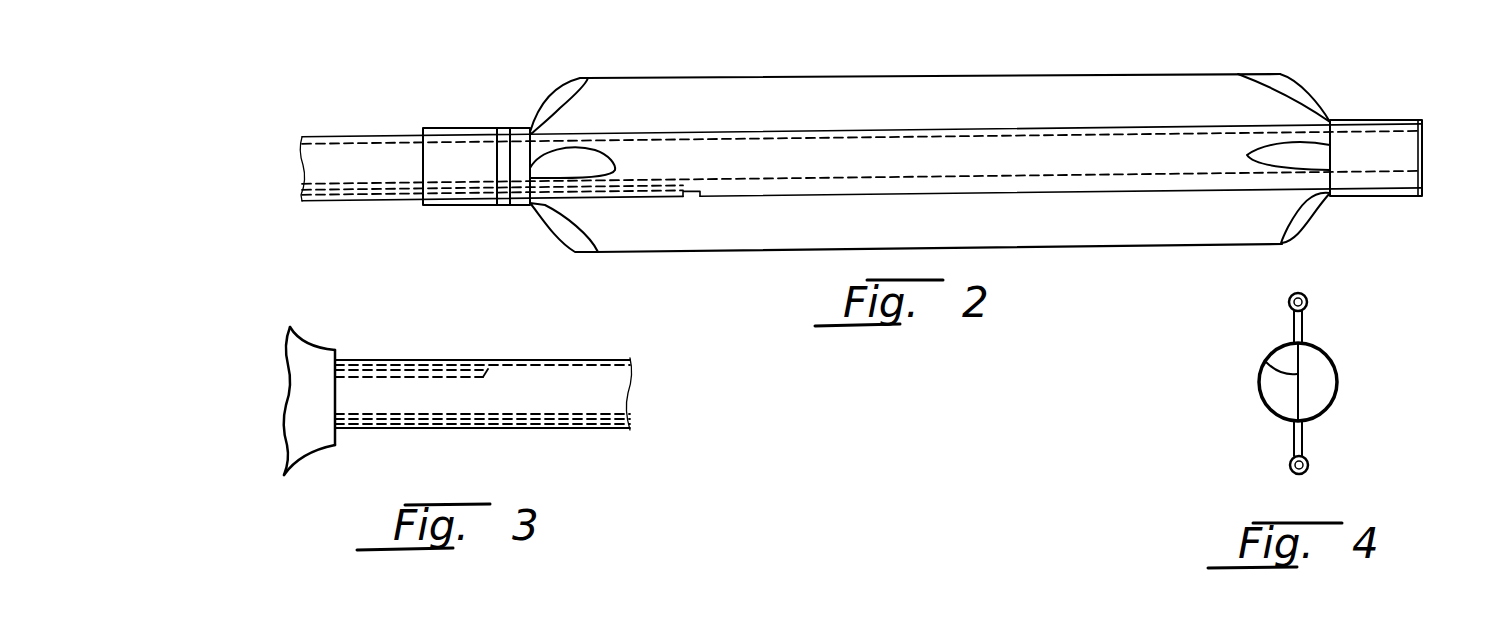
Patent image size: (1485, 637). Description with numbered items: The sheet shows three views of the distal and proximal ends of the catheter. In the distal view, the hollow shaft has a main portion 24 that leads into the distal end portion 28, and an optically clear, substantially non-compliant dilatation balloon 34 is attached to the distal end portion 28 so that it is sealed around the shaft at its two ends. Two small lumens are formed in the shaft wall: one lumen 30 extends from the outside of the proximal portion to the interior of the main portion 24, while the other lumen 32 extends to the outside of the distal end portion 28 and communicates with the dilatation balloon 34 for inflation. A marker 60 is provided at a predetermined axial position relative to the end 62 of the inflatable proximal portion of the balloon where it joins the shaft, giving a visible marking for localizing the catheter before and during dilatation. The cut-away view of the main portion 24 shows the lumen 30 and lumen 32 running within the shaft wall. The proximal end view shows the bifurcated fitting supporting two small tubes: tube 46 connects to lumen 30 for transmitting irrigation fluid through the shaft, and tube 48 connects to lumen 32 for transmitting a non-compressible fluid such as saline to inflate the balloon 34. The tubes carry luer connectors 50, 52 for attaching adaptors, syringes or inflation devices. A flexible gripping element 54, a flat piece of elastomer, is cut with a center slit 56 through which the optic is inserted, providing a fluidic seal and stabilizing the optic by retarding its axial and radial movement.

In FIG. 3, the main portion 24 is at (564, 360).
In FIG. 2, the distal end portion 28 is at (441, 106).
In FIG. 3, the lumen 30 is at (413, 372).
In FIG. 2, the lumen 32 is at (651, 195).
In FIG. 3, the lumen 32 is at (567, 422).
In FIG. 2, the dilatation balloon 34 is at (964, 77).
In FIG. 4, the tube 46 is at (1304, 331).
In FIG. 4, the tube 48 is at (1304, 444).
In FIG. 4, the luer connector 50 is at (1310, 303).
In FIG. 4, the luer connector 52 is at (1310, 465).
In FIG. 4, the flexible gripping element 54 is at (1320, 376).
In FIG. 4, the center slit 56 is at (1262, 364).
In FIG. 2, the marker 60 is at (503, 196).
In FIG. 2, the end 62 is at (531, 206).